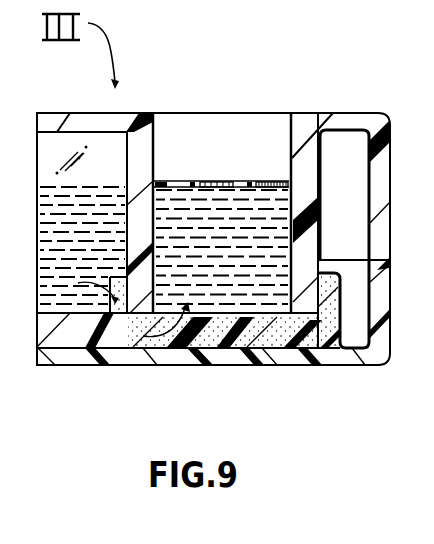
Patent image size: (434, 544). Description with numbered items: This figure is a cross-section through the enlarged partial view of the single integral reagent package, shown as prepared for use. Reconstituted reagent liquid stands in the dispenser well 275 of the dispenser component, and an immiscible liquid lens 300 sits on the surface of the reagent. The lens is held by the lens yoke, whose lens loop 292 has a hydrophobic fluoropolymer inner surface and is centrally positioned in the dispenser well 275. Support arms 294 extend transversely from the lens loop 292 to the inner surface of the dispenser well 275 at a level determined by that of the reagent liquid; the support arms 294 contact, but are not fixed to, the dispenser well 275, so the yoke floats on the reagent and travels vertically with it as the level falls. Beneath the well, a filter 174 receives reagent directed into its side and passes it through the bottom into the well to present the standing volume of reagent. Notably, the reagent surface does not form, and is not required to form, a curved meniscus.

The dispenser well 275 is at (152, 113).
The immiscible liquid lens 300 is at (212, 153).
The lens loop 292 is at (269, 152).
The support arms 294 is at (283, 178).
The filter 174 is at (272, 337).